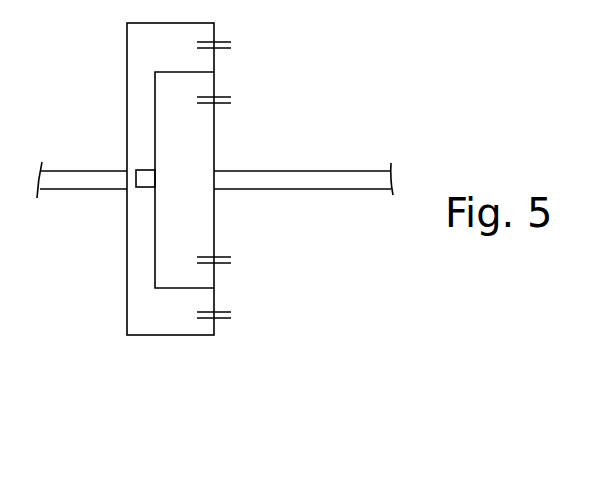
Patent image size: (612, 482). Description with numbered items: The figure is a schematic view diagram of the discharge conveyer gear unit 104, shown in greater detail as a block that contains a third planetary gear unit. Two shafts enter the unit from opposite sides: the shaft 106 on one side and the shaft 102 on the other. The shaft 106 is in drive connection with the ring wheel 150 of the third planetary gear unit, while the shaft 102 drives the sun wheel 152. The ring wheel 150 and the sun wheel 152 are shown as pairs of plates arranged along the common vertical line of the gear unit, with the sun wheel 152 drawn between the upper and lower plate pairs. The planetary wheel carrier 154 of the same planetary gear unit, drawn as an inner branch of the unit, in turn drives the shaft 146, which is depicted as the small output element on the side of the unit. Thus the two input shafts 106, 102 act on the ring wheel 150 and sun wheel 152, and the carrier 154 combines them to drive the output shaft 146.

The shaft 102 is at (345, 182).
The discharge conveyer gear unit 104 is at (158, 358).
The shaft 106 is at (83, 178).
The shaft 146 is at (145, 175).
The ring wheel 150 is at (214, 327).
The sun wheel 152 is at (214, 145).
The planetary wheel carrier 154 is at (214, 72).